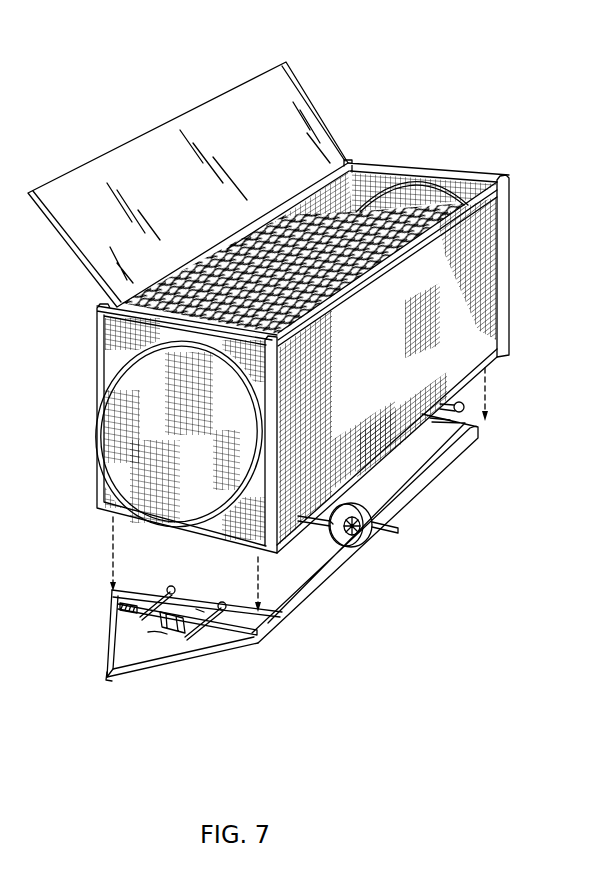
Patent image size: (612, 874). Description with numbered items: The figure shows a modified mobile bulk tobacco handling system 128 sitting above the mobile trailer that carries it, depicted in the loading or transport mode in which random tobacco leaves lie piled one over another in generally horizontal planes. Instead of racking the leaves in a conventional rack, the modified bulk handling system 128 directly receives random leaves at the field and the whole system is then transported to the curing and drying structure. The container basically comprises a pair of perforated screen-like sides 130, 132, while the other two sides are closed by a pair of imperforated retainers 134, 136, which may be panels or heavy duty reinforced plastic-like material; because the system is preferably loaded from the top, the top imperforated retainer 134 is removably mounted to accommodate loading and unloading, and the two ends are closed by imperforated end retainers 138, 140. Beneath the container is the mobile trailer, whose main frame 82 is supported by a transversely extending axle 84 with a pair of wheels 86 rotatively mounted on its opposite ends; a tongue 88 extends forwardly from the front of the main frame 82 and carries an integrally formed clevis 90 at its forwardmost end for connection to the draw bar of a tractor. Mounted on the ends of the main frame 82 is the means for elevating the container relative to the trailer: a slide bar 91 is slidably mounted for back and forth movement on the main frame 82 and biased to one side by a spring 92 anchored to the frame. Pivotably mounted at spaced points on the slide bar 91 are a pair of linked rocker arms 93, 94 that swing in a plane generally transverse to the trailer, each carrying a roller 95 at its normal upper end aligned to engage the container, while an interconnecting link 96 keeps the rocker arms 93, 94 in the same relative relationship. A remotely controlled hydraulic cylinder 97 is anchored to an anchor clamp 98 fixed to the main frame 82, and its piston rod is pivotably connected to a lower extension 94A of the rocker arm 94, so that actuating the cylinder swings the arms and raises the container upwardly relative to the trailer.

The main frame 82 is at (430, 490).
The axle 84 is at (328, 537).
The wheels 86 is at (378, 525).
The tongue 88 is at (193, 660).
The clevis 90 is at (108, 680).
The slide bar 91 is at (232, 650).
The spring 92 is at (128, 610).
The rocker arm 93 is at (153, 595).
The rocker arm 94 is at (187, 616).
The lower extension 94A is at (205, 628).
The roller 95 is at (178, 581).
The interconnecting link 96 is at (200, 608).
The hydraulic cylinder 97 is at (176, 640).
The anchor clamp 98 is at (166, 634).
The modified bulk handling system 128 is at (82, 430).
The perforated screen-like side 130 is at (328, 463).
The perforated screen-like side 132 is at (350, 160).
The imperforated retainer 134 is at (304, 100).
The imperforated retainer 136 is at (295, 520).
The imperforated end retainer 138 is at (123, 478).
The imperforated end retainer 140 is at (420, 187).